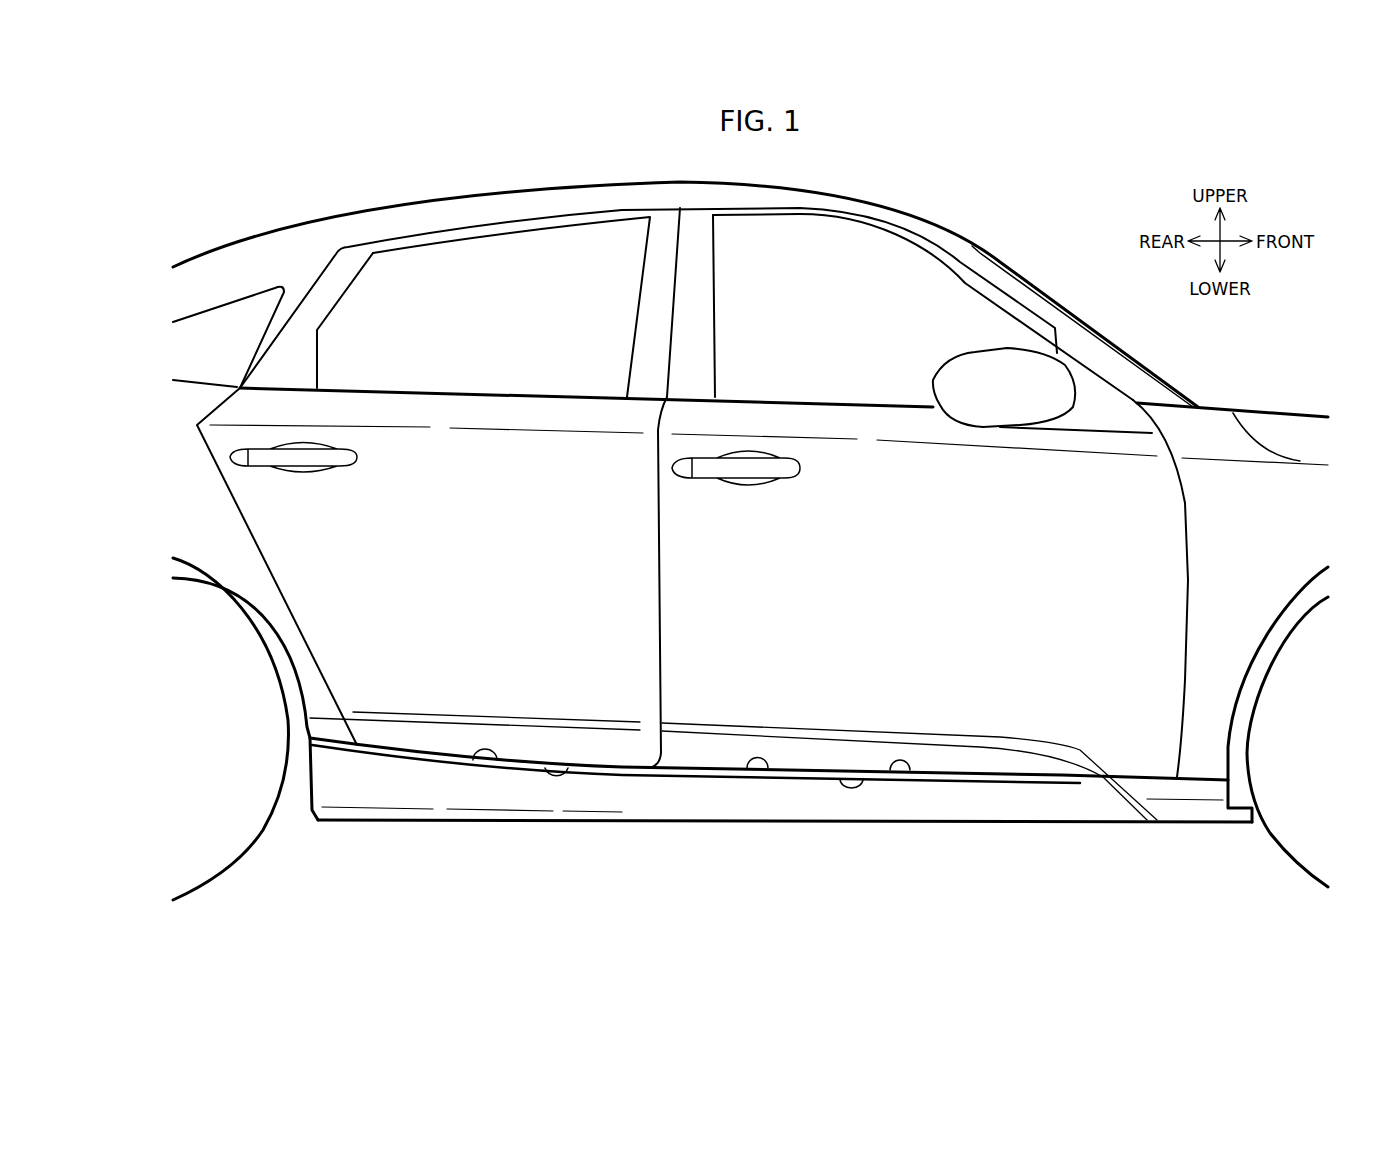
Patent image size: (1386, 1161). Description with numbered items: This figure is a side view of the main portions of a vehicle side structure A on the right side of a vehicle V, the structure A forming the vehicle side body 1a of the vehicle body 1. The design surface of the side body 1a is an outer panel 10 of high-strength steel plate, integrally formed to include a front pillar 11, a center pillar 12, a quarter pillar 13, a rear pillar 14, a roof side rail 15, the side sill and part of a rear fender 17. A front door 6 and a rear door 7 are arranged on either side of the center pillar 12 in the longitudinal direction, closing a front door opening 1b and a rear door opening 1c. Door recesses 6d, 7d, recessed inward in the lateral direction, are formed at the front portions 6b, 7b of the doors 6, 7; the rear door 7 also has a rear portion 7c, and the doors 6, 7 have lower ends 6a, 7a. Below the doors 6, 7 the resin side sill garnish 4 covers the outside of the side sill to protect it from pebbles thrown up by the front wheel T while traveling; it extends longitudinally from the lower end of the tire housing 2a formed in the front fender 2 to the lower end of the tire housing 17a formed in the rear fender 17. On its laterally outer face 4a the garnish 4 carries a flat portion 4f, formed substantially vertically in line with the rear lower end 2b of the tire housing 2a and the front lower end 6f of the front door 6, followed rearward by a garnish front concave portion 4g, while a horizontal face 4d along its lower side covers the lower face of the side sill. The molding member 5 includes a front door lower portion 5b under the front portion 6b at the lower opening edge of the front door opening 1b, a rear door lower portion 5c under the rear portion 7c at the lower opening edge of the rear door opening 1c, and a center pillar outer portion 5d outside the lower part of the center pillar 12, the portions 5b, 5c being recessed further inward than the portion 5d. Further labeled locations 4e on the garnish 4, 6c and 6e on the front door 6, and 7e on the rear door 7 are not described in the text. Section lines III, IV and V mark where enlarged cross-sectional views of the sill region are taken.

The vehicle body 1 is at (897, 198).
The vehicle side body 1a is at (1252, 507).
The front door opening 1b is at (923, 307).
The rear door opening 1c is at (511, 307).
The front fender 2 is at (1300, 517).
The tire housing 2a is at (1256, 640).
The rear lower end 2b is at (1203, 763).
The side sill garnish 4 is at (990, 831).
The outer face 4a is at (962, 803).
The horizontal face 4d is at (1250, 826).
The fastening portion 4e is at (905, 787).
The flat portion 4f is at (1190, 793).
The garnish front concave portion 4g is at (1092, 792).
The molding member 5 is at (823, 791).
The front door lower portion 5b is at (757, 778).
The rear door lower portion 5c is at (486, 760).
The center pillar outer portion 5d is at (653, 777).
The front door 6 is at (878, 490).
The lower end 6a is at (863, 774).
The front portion 6b is at (1082, 736).
The rear lower portion of front door 6c is at (681, 753).
The door recess 6d is at (943, 752).
The lower edge of front door 6e is at (773, 753).
The front lower end 6f is at (1140, 760).
The rear door 7 is at (500, 482).
The lower end 7a is at (567, 765).
The front portion 7b is at (643, 753).
The rear portion 7c is at (373, 734).
The door recess 7d is at (527, 747).
The rear lower portion of rear door 7e is at (443, 736).
The outer panel 10 is at (505, 184).
The front pillar 11 is at (1023, 290).
The center pillar 12 is at (713, 247).
The quarter pillar 13 is at (262, 323).
The rear pillar 14 is at (200, 283).
The roof side rail 15 is at (683, 195).
The rear fender 17 is at (205, 535).
The tire housing 17a is at (282, 656).
The front wheel T is at (268, 840).
The vehicle side structure A is at (558, 840).
The vehicle V is at (335, 178).
The section line IV- IV is at (603, 652).
The section line III is at (1018, 652).